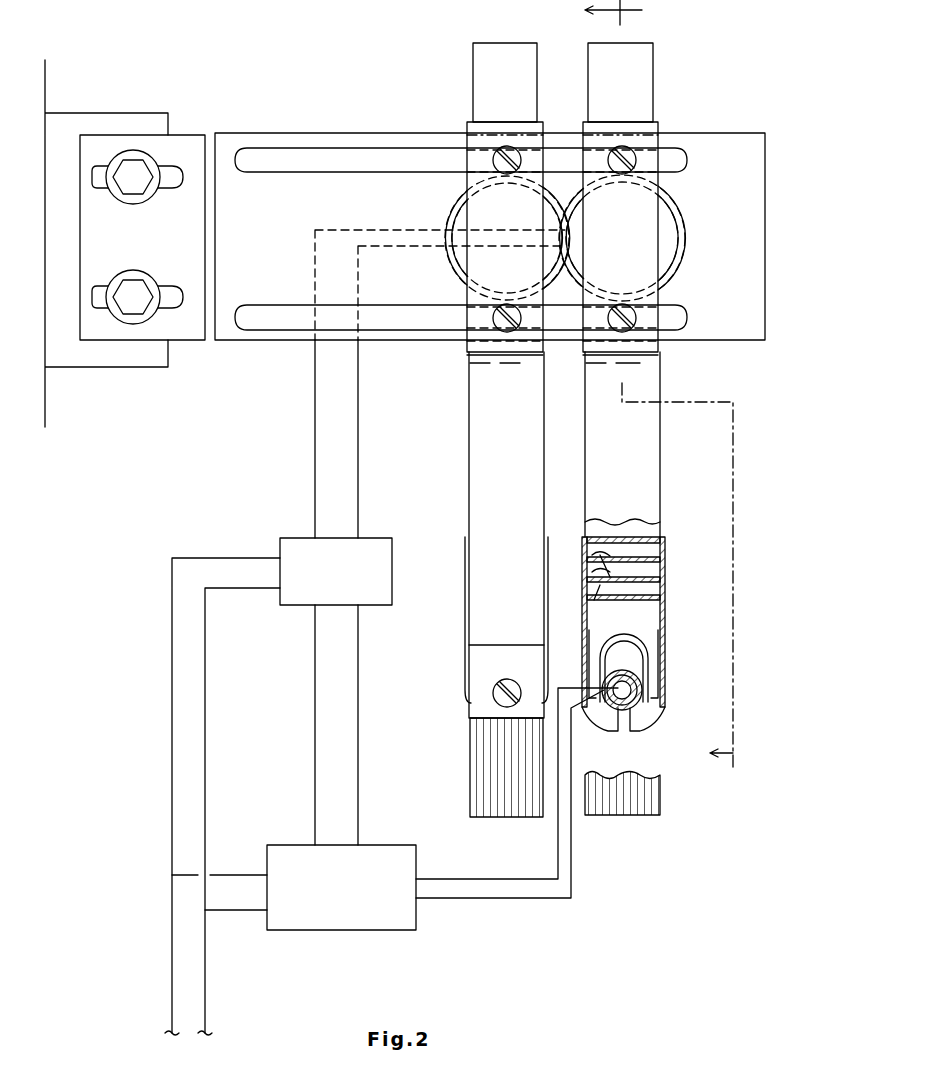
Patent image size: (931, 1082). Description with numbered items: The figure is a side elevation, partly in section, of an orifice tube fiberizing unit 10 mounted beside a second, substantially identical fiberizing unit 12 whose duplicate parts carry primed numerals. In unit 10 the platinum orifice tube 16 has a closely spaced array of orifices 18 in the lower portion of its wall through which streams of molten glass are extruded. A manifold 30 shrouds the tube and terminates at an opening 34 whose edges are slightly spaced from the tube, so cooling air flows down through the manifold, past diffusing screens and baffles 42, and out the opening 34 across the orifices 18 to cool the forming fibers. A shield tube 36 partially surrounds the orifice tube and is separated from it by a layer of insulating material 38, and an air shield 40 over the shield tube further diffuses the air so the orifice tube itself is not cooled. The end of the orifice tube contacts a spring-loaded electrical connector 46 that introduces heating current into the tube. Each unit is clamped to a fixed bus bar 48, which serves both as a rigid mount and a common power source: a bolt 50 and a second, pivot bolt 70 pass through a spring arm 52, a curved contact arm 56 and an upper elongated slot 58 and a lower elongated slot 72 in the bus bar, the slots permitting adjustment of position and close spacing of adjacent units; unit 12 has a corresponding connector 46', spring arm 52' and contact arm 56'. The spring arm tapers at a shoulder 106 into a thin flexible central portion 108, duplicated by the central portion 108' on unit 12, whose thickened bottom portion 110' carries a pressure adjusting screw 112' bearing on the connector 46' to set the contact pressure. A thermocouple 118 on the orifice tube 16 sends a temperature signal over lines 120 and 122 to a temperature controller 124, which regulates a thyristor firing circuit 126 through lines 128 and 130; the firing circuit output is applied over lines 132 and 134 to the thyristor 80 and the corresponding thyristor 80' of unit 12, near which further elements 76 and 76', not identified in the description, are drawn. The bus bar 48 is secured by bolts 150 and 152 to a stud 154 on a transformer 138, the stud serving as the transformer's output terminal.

The orifice tube fiberizing unit 10 is at (674, 547).
The orifice tube fiberizing unit 12 is at (457, 583).
The orifice tube 16 is at (640, 690).
The orifices 18 is at (622, 712).
The manifold 30 is at (655, 570).
The opening 34 is at (630, 730).
The shield tube 36 is at (636, 660).
The insulating material 38 is at (640, 674).
The air shield 40 is at (624, 644).
The diffusing screens and baffles 42 is at (585, 572).
The spring-loaded electrical connector 46 is at (640, 794).
The spring-loaded electrical connector 46' is at (481, 767).
The bus bar 48 is at (279, 232).
The bolt 50 is at (632, 162).
The spring arm 52 is at (620, 130).
The spring arm 52' is at (505, 225).
The curved contact arm 56 is at (651, 74).
The curved contact arm 56' is at (501, 61).
The upper elongated slot 58 is at (358, 152).
The second bolt 70 is at (627, 310).
The lower elongated slot 72 is at (382, 325).
The clamp ring 76 is at (646, 238).
The clamp ring 76' is at (482, 238).
The thyristor 80 is at (644, 238).
The thyristor 80' is at (489, 238).
The shoulder 106 is at (650, 356).
The central portion 108 is at (649, 444).
The central portion 108' is at (478, 535).
The bottom portion 110' is at (506, 627).
The pressure adjusting screw 112' is at (506, 675).
The thermocouple 118 is at (610, 712).
The line 120 is at (457, 877).
The line 122 is at (460, 900).
The temperature controller 124 is at (284, 842).
The thyristor firing circuit 126 is at (296, 540).
The line 128 is at (313, 692).
The line 130 is at (360, 692).
The line 132 is at (313, 410).
The line 134 is at (360, 410).
The transformer 138 is at (49, 74).
The bolt 150 is at (133, 185).
The bolt 152 is at (133, 280).
The stud 154 is at (135, 120).